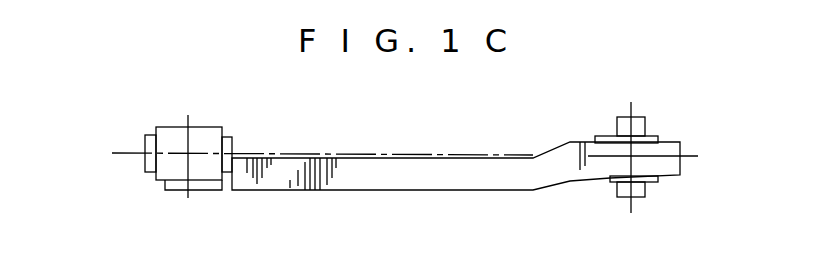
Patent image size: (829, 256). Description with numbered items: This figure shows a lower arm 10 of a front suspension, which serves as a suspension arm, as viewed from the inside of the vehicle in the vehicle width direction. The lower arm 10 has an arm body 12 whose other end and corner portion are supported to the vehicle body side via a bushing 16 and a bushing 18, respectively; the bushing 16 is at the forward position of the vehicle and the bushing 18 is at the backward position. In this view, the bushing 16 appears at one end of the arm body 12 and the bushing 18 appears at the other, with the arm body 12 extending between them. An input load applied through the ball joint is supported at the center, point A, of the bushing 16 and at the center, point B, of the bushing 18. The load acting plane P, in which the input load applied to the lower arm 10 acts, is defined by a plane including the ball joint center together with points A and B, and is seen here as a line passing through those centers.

The lower arm 10 is at (456, 196).
The arm body 12 is at (378, 192).
The bushing 16 is at (228, 135).
The bushing 18 is at (652, 135).
The load acting plane P is at (128, 148).
The center of the bushing 16 A is at (188, 153).
The center of the bushing 18 B is at (632, 157).